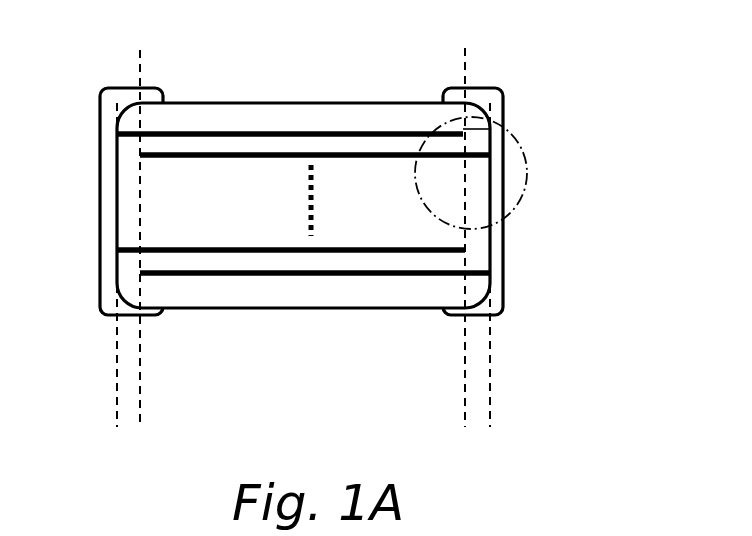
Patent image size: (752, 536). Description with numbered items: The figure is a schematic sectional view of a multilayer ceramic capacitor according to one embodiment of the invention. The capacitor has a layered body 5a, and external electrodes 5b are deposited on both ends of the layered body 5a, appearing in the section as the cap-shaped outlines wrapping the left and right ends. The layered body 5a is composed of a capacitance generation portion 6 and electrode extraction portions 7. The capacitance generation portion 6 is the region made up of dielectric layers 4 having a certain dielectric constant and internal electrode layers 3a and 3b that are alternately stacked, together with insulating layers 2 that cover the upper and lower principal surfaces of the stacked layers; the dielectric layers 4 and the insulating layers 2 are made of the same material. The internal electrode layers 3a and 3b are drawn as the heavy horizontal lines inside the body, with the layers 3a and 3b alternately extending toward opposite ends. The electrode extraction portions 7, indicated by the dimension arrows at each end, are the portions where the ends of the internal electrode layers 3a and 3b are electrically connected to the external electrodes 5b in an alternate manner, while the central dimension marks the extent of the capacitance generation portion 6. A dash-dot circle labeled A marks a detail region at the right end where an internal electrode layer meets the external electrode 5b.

The insulating layers 2 is at (241, 115).
The internal electrode layer 3a is at (295, 153).
The internal electrode layer 3b is at (283, 135).
The dielectric layers 4 is at (330, 235).
The layered body 5a is at (183, 97).
The external electrodes 5b is at (73, 333).
The capacitance generation portion 6 is at (464, 391).
The electrode extraction portions 7 is at (190, 412).
The detail region A is at (518, 140).